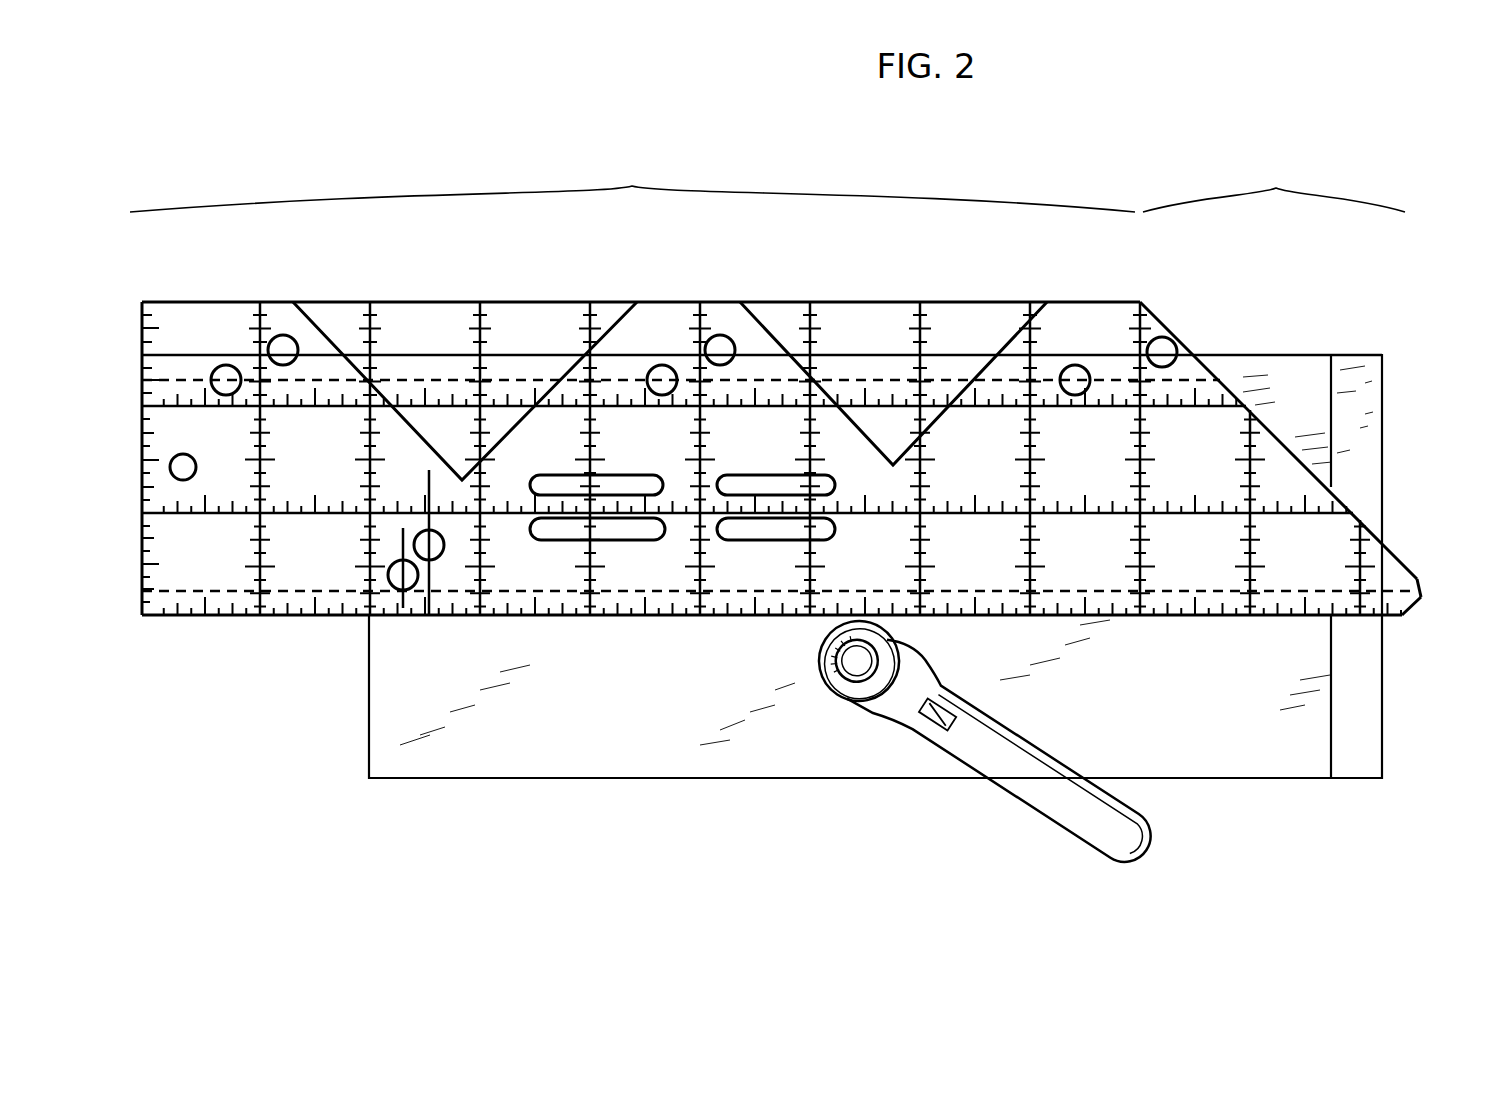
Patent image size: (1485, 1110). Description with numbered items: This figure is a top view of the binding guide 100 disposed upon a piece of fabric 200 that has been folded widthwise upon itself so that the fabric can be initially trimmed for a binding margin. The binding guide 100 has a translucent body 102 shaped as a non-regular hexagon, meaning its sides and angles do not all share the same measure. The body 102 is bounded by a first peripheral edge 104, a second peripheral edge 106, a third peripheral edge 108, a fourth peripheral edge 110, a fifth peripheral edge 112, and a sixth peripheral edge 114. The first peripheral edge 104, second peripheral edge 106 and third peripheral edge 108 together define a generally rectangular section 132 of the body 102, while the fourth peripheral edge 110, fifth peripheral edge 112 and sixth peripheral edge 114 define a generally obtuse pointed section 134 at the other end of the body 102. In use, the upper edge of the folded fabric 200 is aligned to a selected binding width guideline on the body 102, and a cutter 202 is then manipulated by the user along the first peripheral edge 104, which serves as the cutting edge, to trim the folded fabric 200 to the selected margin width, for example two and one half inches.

The binding guide 100 is at (1358, 340).
The body 102 is at (1099, 333).
The first peripheral edge 104 is at (292, 621).
The second peripheral edge 106 is at (136, 578).
The third peripheral edge 108 is at (532, 296).
The fourth peripheral edge 110 is at (1168, 323).
The fifth peripheral edge 112 is at (1426, 583).
The sixth peripheral edge 114 is at (1412, 621).
The generally rectangular section 132 is at (632, 185).
The generally obtuse pointed section 134 is at (1274, 187).
The fabric 200 is at (1353, 479).
The cutter 202 is at (1040, 806).